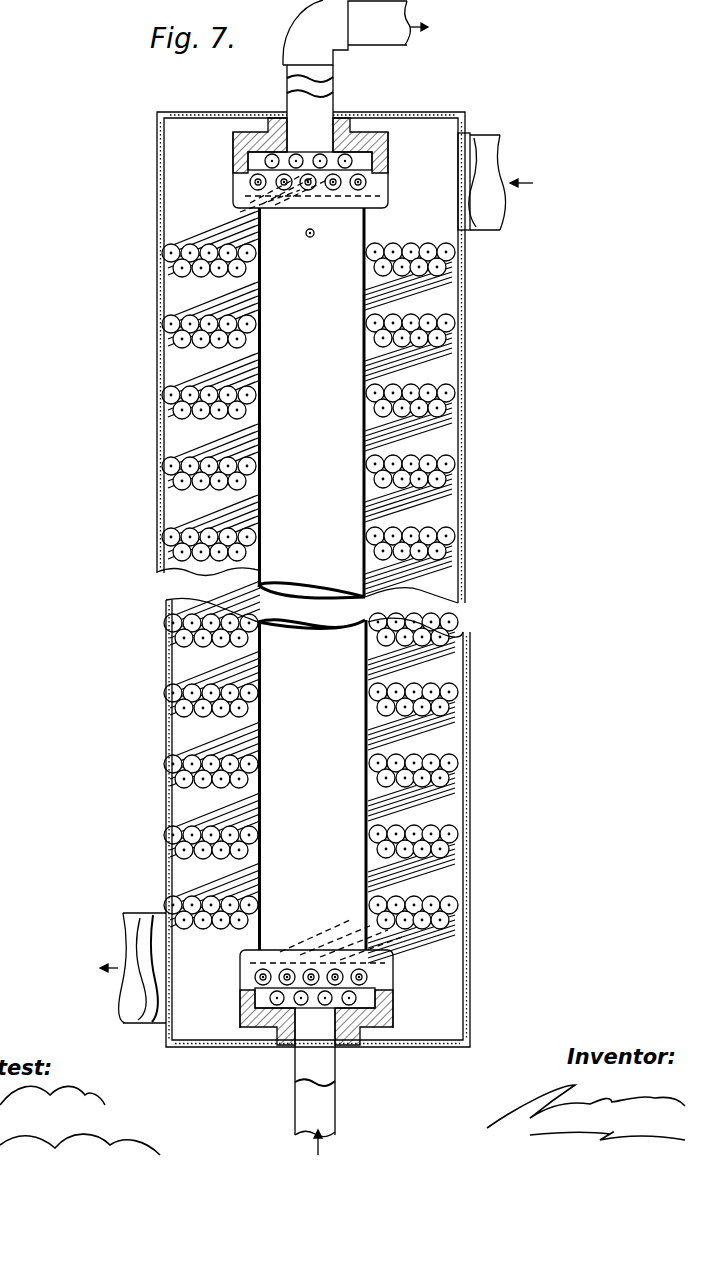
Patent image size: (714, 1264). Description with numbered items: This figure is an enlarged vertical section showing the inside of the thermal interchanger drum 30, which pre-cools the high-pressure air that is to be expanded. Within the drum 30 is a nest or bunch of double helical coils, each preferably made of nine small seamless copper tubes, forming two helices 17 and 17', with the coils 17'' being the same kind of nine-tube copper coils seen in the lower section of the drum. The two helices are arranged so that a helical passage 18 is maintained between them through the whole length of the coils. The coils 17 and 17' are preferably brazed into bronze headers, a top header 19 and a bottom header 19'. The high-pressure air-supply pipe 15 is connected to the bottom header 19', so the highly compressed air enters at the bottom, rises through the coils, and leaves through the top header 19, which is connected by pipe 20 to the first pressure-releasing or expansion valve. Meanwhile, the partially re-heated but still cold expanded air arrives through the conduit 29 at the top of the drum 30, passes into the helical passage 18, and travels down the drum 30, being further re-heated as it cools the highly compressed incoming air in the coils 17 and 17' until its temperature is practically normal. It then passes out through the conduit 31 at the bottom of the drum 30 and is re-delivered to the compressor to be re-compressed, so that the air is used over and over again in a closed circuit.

The high-pressure air-supply pipe 15 is at (330, 1088).
The helical coil 17 is at (154, 586).
The helical coil 17' is at (480, 771).
The helical tube coils (upper right section) 17'' is at (489, 401).
The helical passage 18 is at (417, 362).
The top header 19 is at (396, 120).
The bottom header 19' is at (298, 1021).
The pipe 20 is at (365, 27).
The conduit 29 is at (483, 165).
The thermal interchanger drum 30 is at (165, 310).
The conduit 31 is at (143, 938).